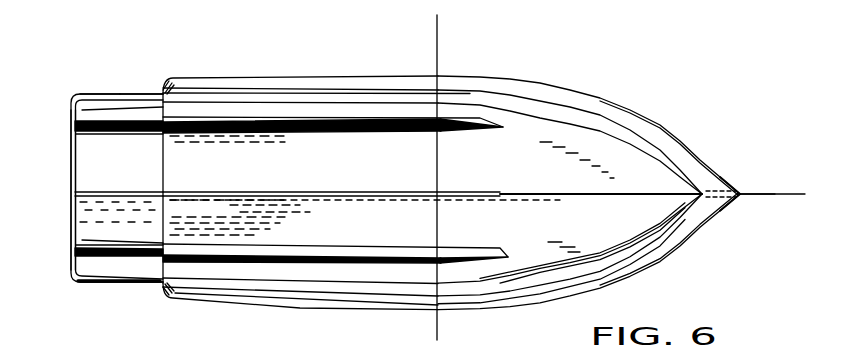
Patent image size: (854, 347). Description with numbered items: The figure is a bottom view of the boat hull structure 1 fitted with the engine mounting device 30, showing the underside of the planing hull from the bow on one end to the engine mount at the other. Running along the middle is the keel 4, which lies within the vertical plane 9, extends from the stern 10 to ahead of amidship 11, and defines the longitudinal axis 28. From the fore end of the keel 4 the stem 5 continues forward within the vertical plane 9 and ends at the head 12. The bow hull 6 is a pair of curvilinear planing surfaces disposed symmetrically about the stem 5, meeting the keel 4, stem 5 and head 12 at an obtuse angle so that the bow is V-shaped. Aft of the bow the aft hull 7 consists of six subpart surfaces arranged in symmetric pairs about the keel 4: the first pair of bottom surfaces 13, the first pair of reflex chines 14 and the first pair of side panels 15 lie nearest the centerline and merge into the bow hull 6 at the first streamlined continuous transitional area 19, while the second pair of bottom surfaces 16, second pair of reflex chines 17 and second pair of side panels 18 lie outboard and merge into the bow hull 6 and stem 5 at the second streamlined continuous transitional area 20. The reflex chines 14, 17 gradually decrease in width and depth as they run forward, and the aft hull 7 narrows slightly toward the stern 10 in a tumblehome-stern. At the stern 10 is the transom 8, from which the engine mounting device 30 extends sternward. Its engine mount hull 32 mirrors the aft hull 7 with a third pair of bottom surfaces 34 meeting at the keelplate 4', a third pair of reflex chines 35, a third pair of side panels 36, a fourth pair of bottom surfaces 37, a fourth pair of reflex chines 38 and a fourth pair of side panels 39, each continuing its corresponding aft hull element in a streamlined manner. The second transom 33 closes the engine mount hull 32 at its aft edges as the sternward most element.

The boat hull structure 1 is at (667, 276).
The keel 4 is at (361, 184).
The keelplate 4' is at (119, 181).
The stem 5 is at (622, 193).
The bow hull 6 is at (616, 164).
The aft hull 7 is at (295, 174).
The transom 8 is at (153, 298).
The vertical plane 9 is at (773, 198).
The stern 10 is at (152, 78).
The amidship 11 is at (440, 335).
The head 12 is at (743, 193).
The first pair of bottom surfaces 13 is at (225, 174).
The first pair of reflex chines 14 is at (230, 125).
The first pair of side panels 15 is at (267, 117).
The second pair of bottom surfaces 16 is at (403, 110).
The second pair of reflex chines 17 is at (360, 93).
The second pair of side panels 18 is at (308, 82).
The first streamlined continuous transitional area 19 is at (503, 122).
The second streamlined continuous transitional area 20 is at (678, 170).
The longitudinal axis 28 is at (763, 200).
The engine mounting device 30 is at (103, 50).
The engine mount hull 32 is at (100, 287).
The second transom 33 is at (72, 183).
The third pair of bottom surfaces 34 is at (160, 174).
The third pair of reflex chines 35 is at (88, 133).
The third pair of side panels 36 is at (80, 124).
The fourth pair of bottom surfaces 37 is at (82, 110).
The fourth pair of reflex chines 38 is at (88, 97).
The fourth pair of side panels 39 is at (147, 95).